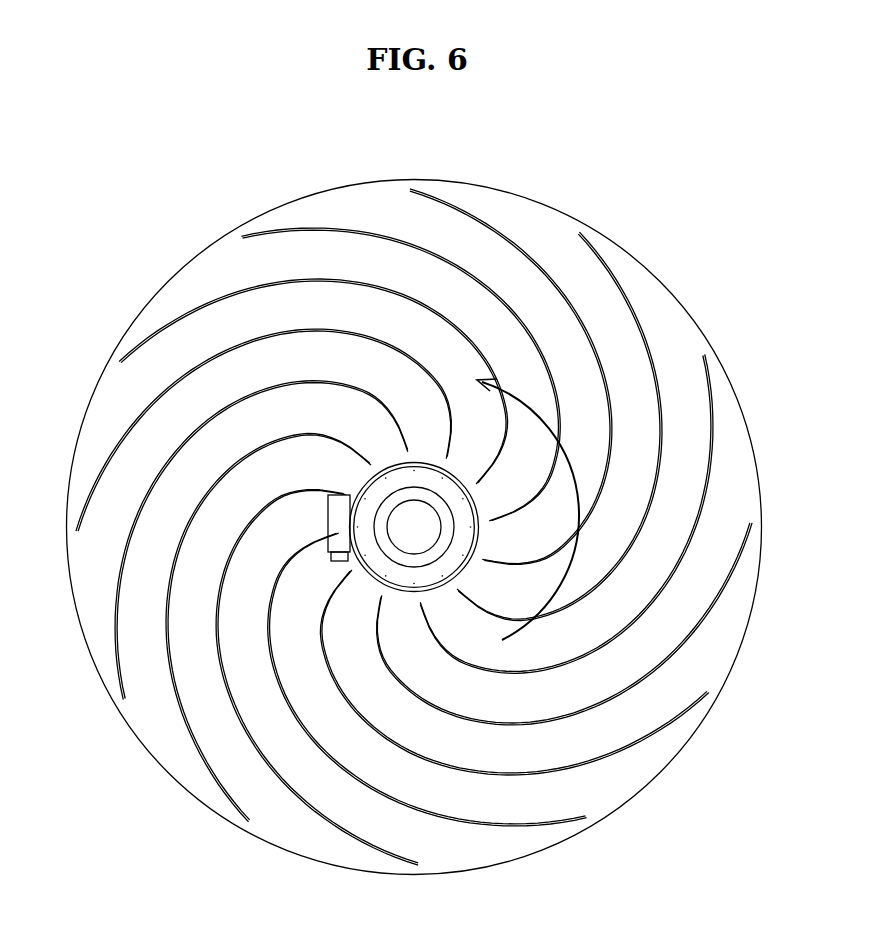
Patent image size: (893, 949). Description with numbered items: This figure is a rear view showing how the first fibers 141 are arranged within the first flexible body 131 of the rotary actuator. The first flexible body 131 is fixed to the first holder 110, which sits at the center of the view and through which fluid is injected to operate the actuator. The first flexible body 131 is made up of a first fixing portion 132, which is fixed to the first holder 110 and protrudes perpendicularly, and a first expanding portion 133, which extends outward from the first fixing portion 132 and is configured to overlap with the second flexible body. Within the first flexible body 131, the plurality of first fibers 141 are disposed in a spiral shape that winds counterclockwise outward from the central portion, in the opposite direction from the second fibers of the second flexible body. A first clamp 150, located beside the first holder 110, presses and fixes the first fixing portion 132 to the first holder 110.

The first holder 110 is at (393, 503).
The first flexible body 131 is at (487, 133).
The first fixing portion 132 is at (447, 487).
The first expanding portion 133 is at (457, 248).
The first fibers 141 is at (653, 363).
The first clamp 150 is at (320, 513).